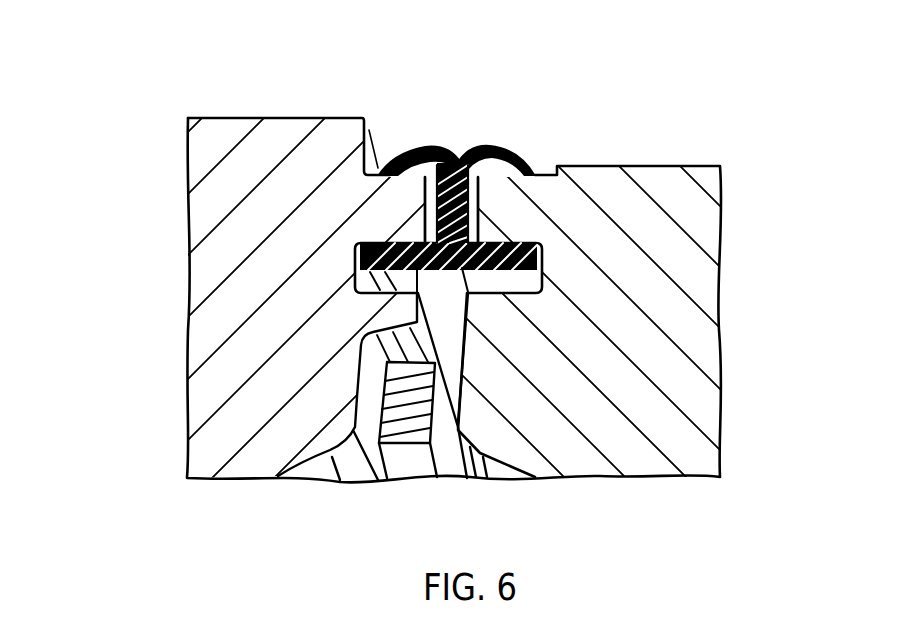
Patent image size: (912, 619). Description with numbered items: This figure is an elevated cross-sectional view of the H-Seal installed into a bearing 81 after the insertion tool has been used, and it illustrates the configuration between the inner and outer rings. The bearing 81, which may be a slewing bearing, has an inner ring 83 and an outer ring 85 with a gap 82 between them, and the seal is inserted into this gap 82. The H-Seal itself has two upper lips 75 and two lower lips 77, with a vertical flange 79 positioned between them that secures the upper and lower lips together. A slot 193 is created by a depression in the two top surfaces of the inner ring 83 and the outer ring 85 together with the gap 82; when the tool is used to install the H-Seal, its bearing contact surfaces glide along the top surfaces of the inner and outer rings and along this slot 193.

The upper lips 75 is at (410, 157).
The lower lips 77 is at (395, 278).
The vertical flange 79 is at (437, 224).
The bearing 81 is at (740, 486).
The gap 82 is at (480, 220).
The inner ring 83 is at (630, 375).
The outer ring 85 is at (227, 367).
The slot 193 is at (543, 174).